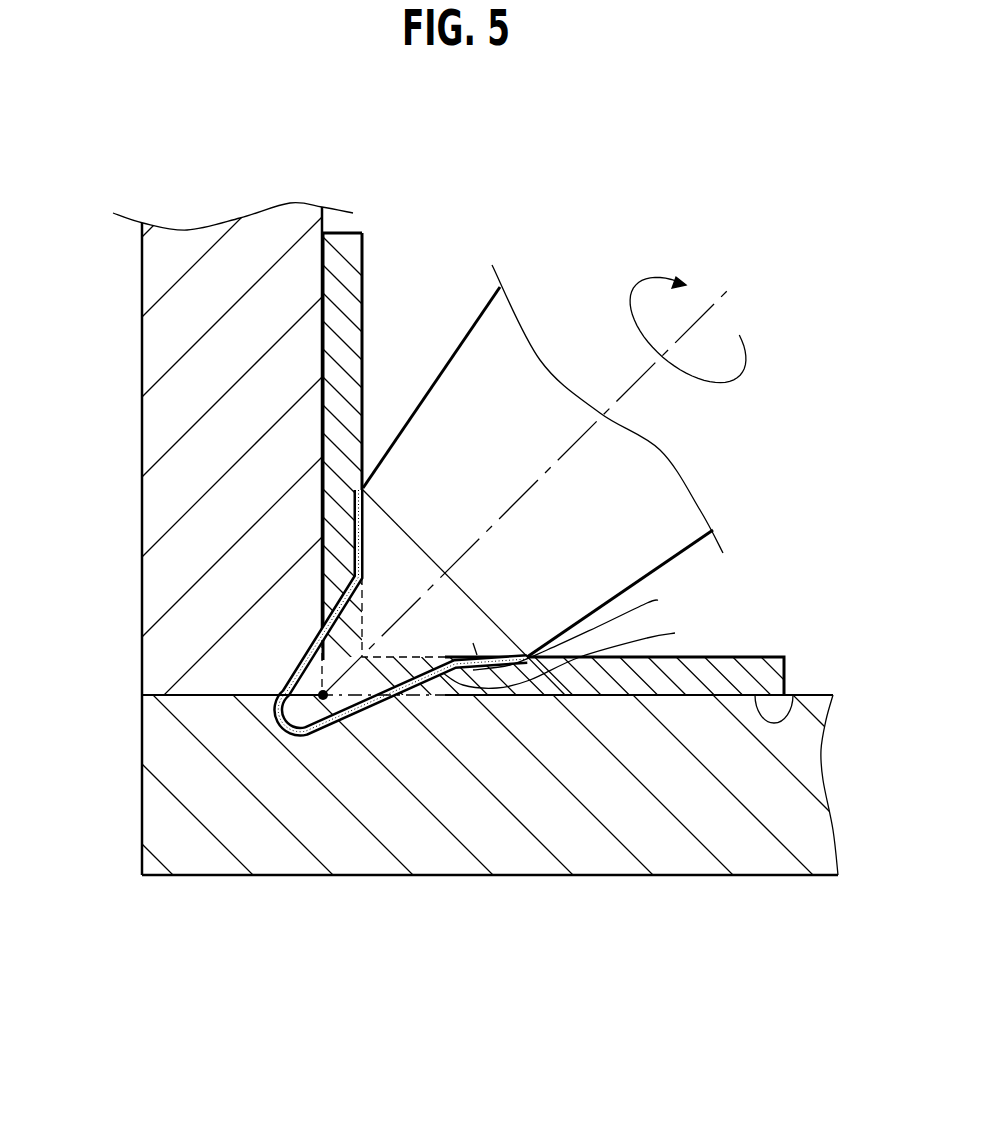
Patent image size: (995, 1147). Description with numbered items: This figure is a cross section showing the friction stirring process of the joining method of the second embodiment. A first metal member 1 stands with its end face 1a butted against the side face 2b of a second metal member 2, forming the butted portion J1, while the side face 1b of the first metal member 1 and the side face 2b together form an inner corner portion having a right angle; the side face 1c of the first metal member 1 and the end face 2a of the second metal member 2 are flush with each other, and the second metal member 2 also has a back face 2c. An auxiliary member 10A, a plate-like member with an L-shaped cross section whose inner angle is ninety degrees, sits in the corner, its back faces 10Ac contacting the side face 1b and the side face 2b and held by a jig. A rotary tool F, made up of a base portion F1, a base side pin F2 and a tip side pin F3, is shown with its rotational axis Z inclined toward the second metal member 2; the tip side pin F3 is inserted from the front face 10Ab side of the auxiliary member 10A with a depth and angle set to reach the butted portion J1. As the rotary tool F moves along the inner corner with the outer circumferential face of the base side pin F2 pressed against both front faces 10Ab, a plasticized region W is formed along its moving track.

The first metal member 1 is at (237, 399).
The end face 1a is at (197, 697).
The side face 1b is at (353, 213).
The side face 1c is at (142, 353).
The second metal member 2 is at (496, 740).
The end face 2a is at (142, 793).
The side face 2b is at (803, 693).
The back face 2c is at (725, 876).
The auxiliary member 10A is at (589, 457).
The front face 10Ab is at (363, 275).
The back face 10Ac is at (792, 693).
The butted portion J1 is at (129, 692).
The plasticized region W is at (297, 742).
The rotary tool F is at (428, 371).
The base portion F1 is at (711, 541).
The base side pin F2 is at (583, 629).
The tip side pin F3 is at (576, 655).
The rotational axis Z is at (532, 478).